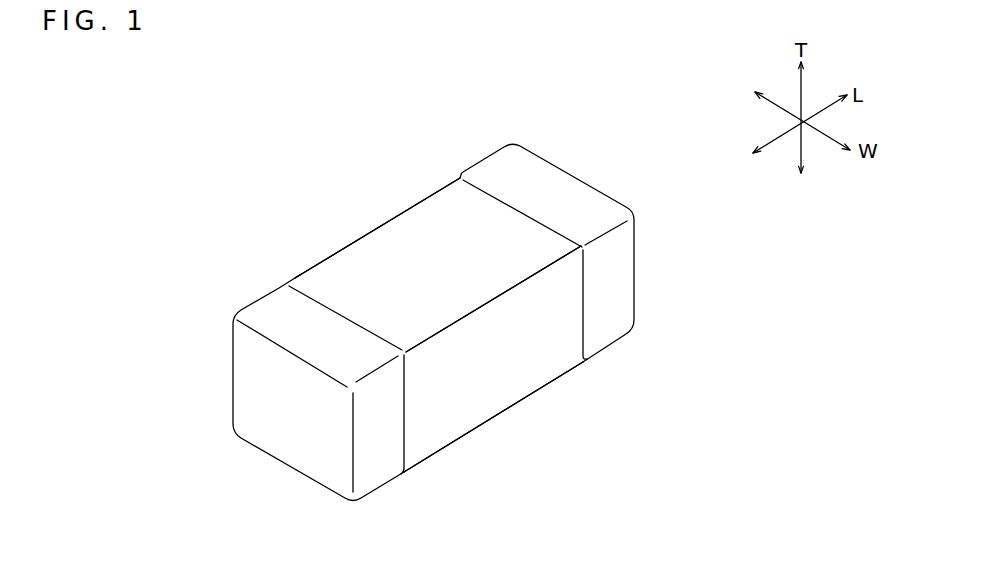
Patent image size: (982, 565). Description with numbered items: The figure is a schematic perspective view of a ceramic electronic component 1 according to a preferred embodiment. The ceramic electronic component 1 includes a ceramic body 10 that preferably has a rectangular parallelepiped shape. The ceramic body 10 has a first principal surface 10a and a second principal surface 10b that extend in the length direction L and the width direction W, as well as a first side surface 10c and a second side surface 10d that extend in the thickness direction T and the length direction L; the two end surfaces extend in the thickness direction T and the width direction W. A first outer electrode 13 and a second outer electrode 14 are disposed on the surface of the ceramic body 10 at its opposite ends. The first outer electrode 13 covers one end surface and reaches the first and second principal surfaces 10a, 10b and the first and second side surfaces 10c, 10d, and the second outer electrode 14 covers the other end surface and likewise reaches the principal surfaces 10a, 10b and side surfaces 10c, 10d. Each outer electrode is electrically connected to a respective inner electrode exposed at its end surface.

The ceramic electronic component 1 is at (587, 113).
The ceramic body 10 is at (418, 183).
The first principal surface 10a is at (409, 237).
The second principal surface 10b is at (473, 428).
The first side surface 10c is at (445, 188).
The second side surface 10d is at (432, 433).
The first outer electrode 13 is at (228, 362).
The second outer electrode 14 is at (636, 281).